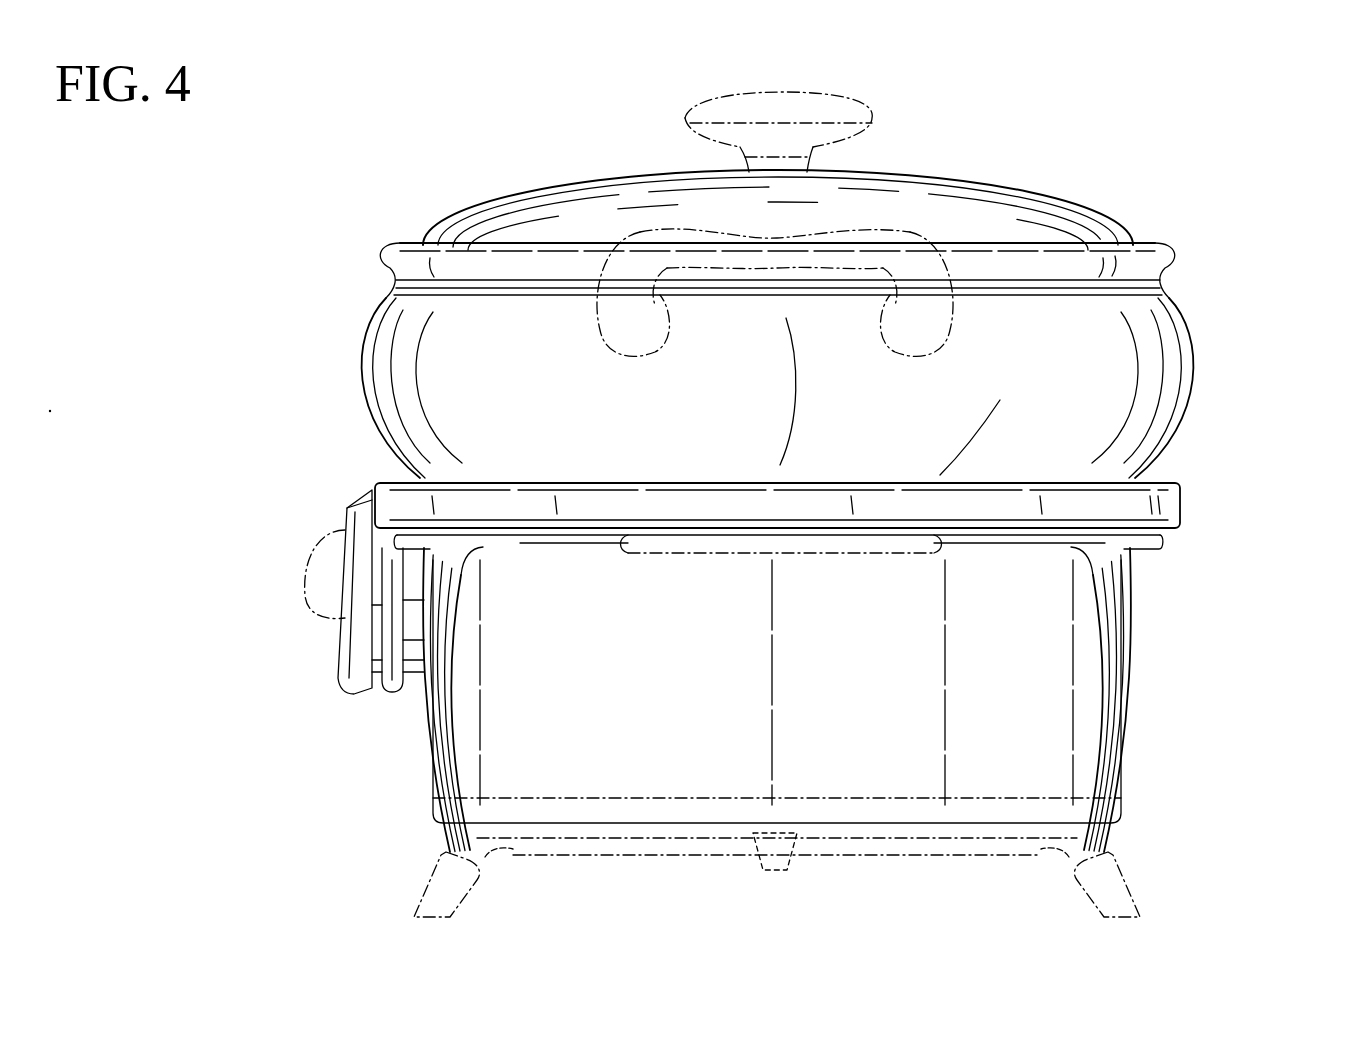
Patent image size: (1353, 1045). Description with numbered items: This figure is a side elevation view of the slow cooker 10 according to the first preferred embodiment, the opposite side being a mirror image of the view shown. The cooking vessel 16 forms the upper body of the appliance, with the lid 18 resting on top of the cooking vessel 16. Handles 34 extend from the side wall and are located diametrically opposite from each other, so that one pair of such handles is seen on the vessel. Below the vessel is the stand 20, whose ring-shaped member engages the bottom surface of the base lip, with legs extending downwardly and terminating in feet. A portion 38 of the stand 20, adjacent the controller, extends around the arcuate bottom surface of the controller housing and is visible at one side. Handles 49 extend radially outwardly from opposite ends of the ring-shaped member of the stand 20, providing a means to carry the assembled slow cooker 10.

The slow cooker 10 is at (1225, 128).
The cooking vessel 16 is at (348, 378).
The lid 18 is at (528, 185).
The stand 20 is at (1150, 665).
The handles 34 is at (868, 242).
The portion of the stand 38 is at (393, 690).
The handles 49 is at (712, 543).